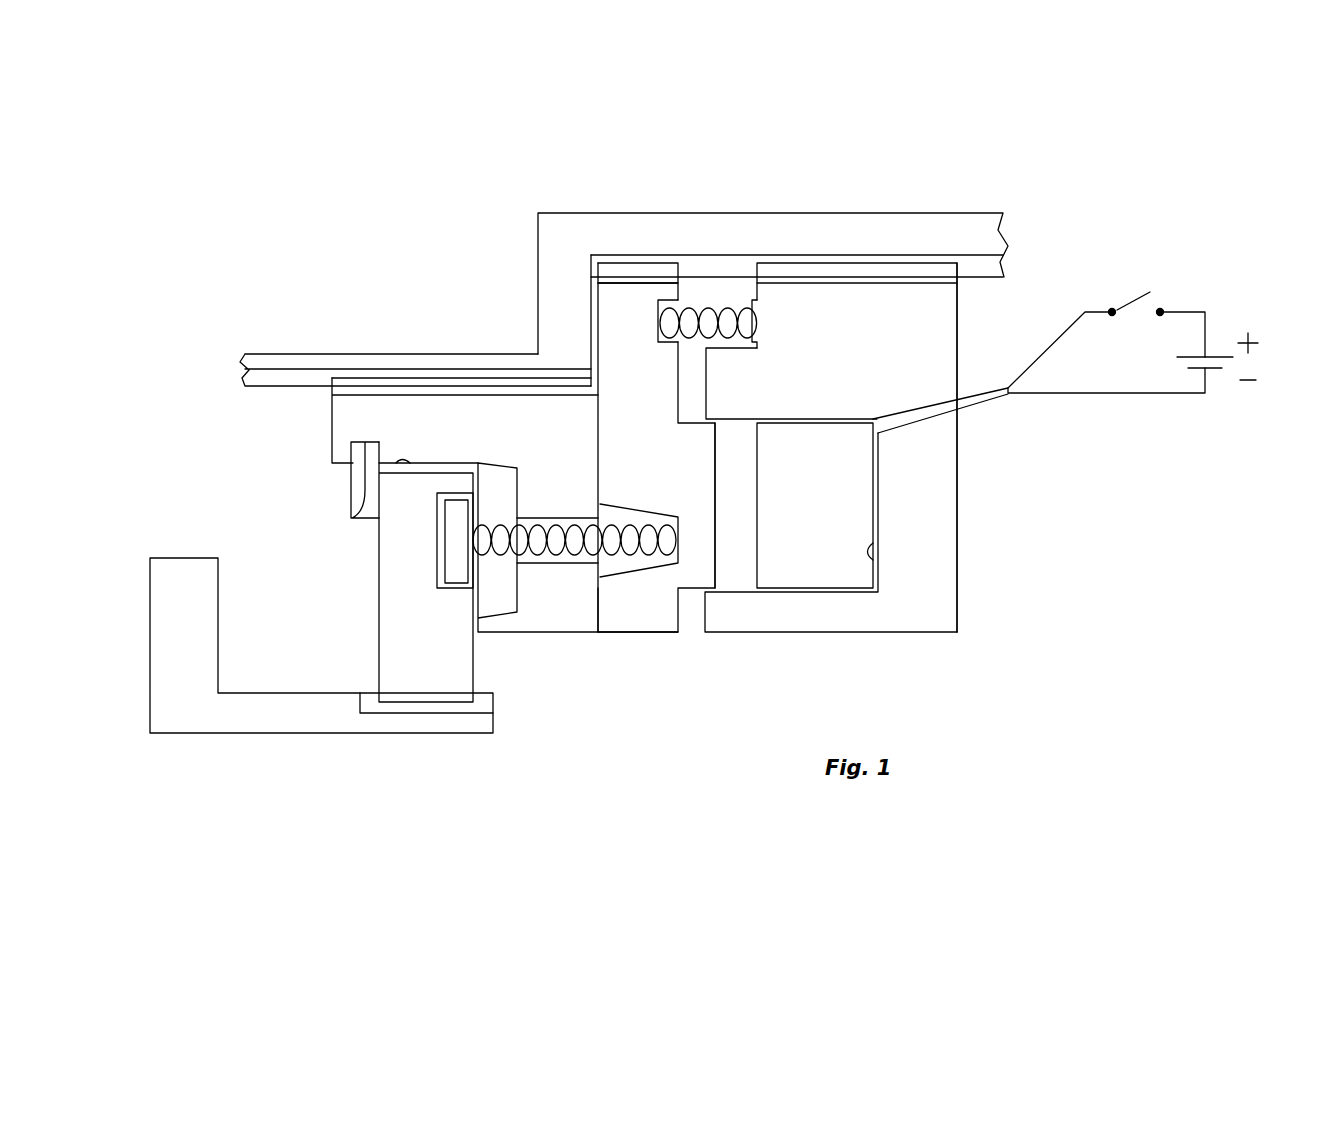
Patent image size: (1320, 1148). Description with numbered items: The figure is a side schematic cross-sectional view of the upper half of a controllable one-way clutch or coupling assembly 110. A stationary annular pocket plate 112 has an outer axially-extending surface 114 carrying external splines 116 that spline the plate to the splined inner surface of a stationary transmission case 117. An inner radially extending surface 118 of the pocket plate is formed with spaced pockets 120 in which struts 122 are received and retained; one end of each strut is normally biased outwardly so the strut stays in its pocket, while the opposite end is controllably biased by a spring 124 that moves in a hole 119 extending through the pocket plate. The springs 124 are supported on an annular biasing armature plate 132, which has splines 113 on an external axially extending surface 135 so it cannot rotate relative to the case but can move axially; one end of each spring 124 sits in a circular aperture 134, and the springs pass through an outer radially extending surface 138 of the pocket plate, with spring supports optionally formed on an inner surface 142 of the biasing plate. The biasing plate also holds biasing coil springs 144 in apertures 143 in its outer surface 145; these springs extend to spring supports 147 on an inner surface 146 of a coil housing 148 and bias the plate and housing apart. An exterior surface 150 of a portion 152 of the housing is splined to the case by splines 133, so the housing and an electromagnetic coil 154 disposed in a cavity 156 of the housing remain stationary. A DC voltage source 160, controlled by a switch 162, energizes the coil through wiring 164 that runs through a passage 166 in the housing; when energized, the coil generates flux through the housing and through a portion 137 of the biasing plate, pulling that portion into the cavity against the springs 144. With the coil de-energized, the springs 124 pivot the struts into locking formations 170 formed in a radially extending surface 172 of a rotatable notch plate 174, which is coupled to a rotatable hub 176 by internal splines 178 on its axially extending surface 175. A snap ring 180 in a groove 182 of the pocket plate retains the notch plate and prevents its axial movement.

The controllable one-way clutch or coupling assembly 110 is at (1021, 511).
The pocket plate 112 is at (561, 636).
The splines 113 is at (663, 275).
The outer axially-extending surface 114 is at (347, 395).
The external splines 116 is at (403, 382).
The transmission case 117 is at (292, 353).
The inner radially extending surface 118 is at (468, 472).
The hole 119 is at (560, 518).
The pocket 120 is at (498, 600).
The strut 122 is at (448, 590).
The spring 124 is at (640, 555).
The biasing armature plate 132 is at (694, 547).
The splines 133 is at (928, 260).
The circular aperture 134 is at (632, 512).
The external axially extending surface 135 is at (640, 276).
The portion 137 is at (717, 505).
The outer radially extending surface 138 is at (600, 603).
The inner surface 142 is at (598, 420).
The aperture 143 is at (670, 307).
The biasing coil spring 144 is at (708, 305).
The outer surface 145 is at (680, 365).
The inner surface 146 is at (832, 310).
The spring support 147 is at (752, 335).
The coil housing 148 is at (862, 257).
The exterior surface 150 is at (940, 276).
The portion 152 is at (887, 378).
The electromagnetic coil 154 is at (855, 518).
The cavity 156 is at (873, 552).
The DC voltage source 160 is at (1220, 345).
The switch 162 is at (1143, 303).
The wiring 164 is at (1058, 337).
The passage 166 is at (898, 425).
The locking formation 170 is at (458, 568).
The radially extending surface 172 is at (440, 552).
The notch plate 174 is at (380, 677).
The axially extending surface 175 is at (400, 700).
The hub 176 is at (198, 735).
The internal splines 178 is at (427, 702).
The snap ring 180 is at (352, 518).
The groove 182 is at (362, 480).